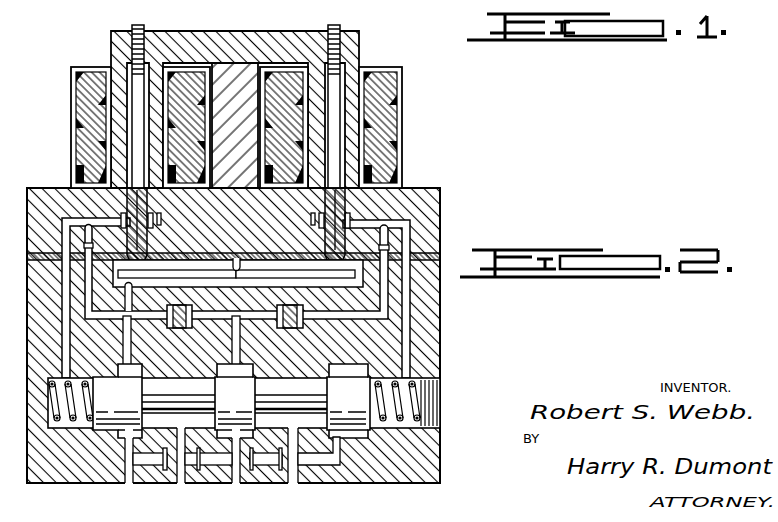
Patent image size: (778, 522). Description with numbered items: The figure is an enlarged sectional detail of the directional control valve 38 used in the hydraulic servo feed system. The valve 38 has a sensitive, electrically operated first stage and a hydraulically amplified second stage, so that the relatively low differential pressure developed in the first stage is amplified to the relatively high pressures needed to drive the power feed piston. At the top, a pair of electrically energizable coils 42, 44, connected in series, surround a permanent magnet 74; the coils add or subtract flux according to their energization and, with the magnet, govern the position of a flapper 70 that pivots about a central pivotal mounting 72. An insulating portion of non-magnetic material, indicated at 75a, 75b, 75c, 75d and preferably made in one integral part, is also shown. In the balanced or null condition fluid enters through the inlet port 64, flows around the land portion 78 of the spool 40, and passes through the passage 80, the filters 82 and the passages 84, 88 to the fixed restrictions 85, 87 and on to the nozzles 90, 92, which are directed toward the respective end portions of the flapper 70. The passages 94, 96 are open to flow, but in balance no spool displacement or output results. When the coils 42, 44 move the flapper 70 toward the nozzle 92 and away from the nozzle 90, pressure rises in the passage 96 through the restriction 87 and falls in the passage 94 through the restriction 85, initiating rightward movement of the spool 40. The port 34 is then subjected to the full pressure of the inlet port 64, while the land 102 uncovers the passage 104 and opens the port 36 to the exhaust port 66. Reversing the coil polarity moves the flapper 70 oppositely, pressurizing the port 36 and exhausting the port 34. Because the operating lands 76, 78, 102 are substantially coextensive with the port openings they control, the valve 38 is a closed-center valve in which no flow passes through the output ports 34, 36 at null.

The port 34 is at (182, 485).
The port 36 is at (293, 485).
The directional control valve 38 is at (263, 25).
The spool 40 is at (272, 398).
The electrically energizable coil 42 is at (87, 113).
The electrically energizable coil 44 is at (386, 112).
The inlet port 64 is at (237, 485).
The exhaust port 66 is at (131, 485).
The flapper 70 is at (202, 273).
The central pivotal mounting 72 is at (255, 273).
The permanent magnet 74 is at (231, 66).
The insulating portion 75a is at (99, 210).
The insulating portion 75b is at (199, 210).
The insulating portion 75c is at (294, 210).
The insulating portion 75d is at (391, 210).
The land 76 is at (130, 405).
The land portion 78 is at (248, 405).
The passage 80 is at (241, 348).
The filter 82 is at (290, 323).
The passage 84 is at (347, 318).
The fixed restriction 85 is at (386, 247).
The fixed restriction 87 is at (90, 245).
The passage 88 is at (105, 322).
The nozzle 90 is at (322, 240).
The nozzle 92 is at (148, 243).
The passage 94 is at (410, 311).
The passage 96 is at (65, 333).
The land 102 is at (364, 405).
The passage 104 is at (342, 447).